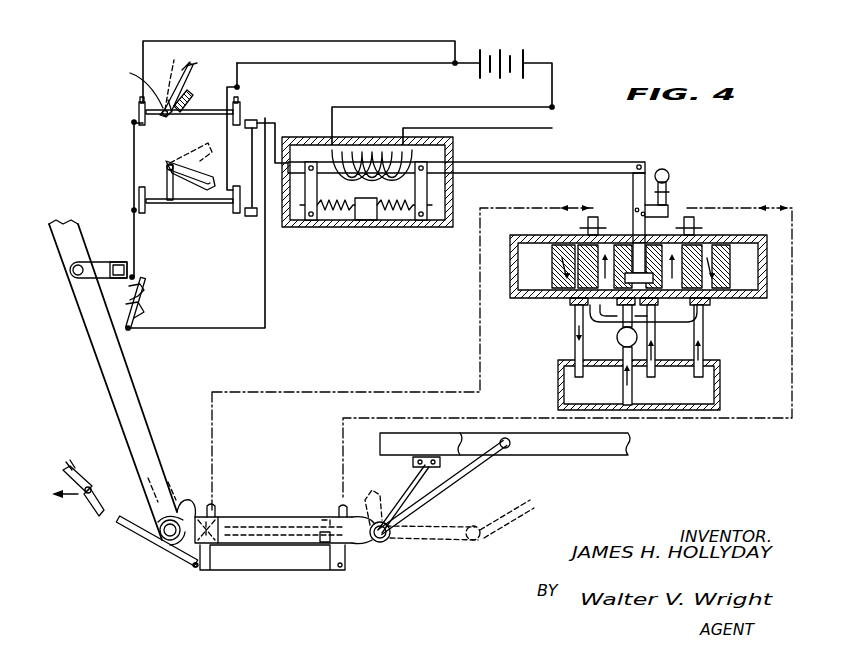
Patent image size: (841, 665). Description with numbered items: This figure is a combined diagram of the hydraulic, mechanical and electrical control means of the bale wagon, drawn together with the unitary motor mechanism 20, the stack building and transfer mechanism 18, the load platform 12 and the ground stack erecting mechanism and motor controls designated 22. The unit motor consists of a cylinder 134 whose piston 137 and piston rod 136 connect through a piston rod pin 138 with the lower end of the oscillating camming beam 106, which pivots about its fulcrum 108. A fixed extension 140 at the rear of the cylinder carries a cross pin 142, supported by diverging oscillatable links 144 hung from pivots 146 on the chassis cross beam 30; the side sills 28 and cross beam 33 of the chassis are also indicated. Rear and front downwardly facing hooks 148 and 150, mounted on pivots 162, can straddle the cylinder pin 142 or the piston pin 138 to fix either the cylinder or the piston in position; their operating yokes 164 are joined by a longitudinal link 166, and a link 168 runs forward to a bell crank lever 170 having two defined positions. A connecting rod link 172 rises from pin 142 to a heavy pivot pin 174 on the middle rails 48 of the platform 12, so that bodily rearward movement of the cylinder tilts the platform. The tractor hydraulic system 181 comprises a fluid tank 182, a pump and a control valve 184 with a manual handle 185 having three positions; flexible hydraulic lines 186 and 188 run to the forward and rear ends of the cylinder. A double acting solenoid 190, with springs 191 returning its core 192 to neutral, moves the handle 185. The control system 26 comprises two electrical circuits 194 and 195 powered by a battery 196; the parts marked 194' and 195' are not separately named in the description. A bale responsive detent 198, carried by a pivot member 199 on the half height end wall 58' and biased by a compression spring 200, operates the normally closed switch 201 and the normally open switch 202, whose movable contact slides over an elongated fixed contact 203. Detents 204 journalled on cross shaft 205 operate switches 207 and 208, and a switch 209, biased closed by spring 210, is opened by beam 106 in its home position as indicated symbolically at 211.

The load carrying and ground stack erecting platform 12 is at (555, 455).
The vertical stack building and transfer mechanism 18 is at (93, 402).
The unitary motor mechanism 20 is at (260, 473).
The ground stack erecting mechanism and unit motor controls 22 is at (268, 607).
The hydraulic control system 26 is at (69, 176).
The side rails or sills 28 is at (648, 463).
The cross beam 30 is at (415, 445).
The cross beam 33 is at (123, 261).
The middle pair of rails 48 is at (560, 448).
The half height end wall 58' is at (194, 90).
The oscillating lever (camming beam) 106 is at (106, 380).
The fulcrum 108 is at (72, 271).
The cylinder 134 is at (278, 548).
The piston rod 136 is at (179, 562).
The piston 137 is at (338, 516).
The piston rod pin 138 is at (162, 542).
The fixed extension 140 is at (368, 543).
The cross pin 142 is at (388, 541).
The diverging oscillatable links 144 is at (403, 479).
The pivots 146 is at (410, 460).
The rear duplex hooks 148 is at (379, 492).
The front duplex hooks 150 is at (171, 519).
The pivots 162 is at (296, 514).
The operating yokes 164 is at (205, 571).
The longitudinal link 166 is at (273, 571).
The link 168 is at (84, 512).
The bell crank lever 170 is at (80, 468).
The connecting rod link 172 is at (455, 473).
The heavy pivot pin 174 is at (507, 437).
The tractor hydraulic system 181 is at (734, 204).
The fluid tank 182 is at (556, 372).
The control valve 184 is at (553, 298).
The manual control handle 185 is at (669, 176).
The flexible hydraulic line 186 is at (381, 392).
The flexible hydraulic line 188 is at (790, 421).
The double acting solenoid 190 is at (447, 227).
The springs 191 is at (373, 221).
The core 192 is at (430, 166).
The electrical circuit 194 is at (266, 166).
The wire 194' is at (466, 185).
The electrical circuit 195 is at (363, 164).
The coil 195' is at (372, 150).
The battery 196 is at (527, 33).
The bale responsive switch actuating detent 198 is at (188, 75).
The pivot member 199 is at (131, 73).
The compression spring 200 is at (185, 114).
The switch 201 is at (139, 109).
The switch 202 is at (243, 115).
The elongated fixed contact 203 is at (260, 121).
The detents 204 is at (196, 204).
The cross shaft 205 is at (166, 167).
The switch 207 is at (139, 197).
The switch 208 is at (236, 217).
The switch 209 is at (141, 301).
The spring 210 is at (128, 291).
The beam engagement indication 211 is at (128, 309).